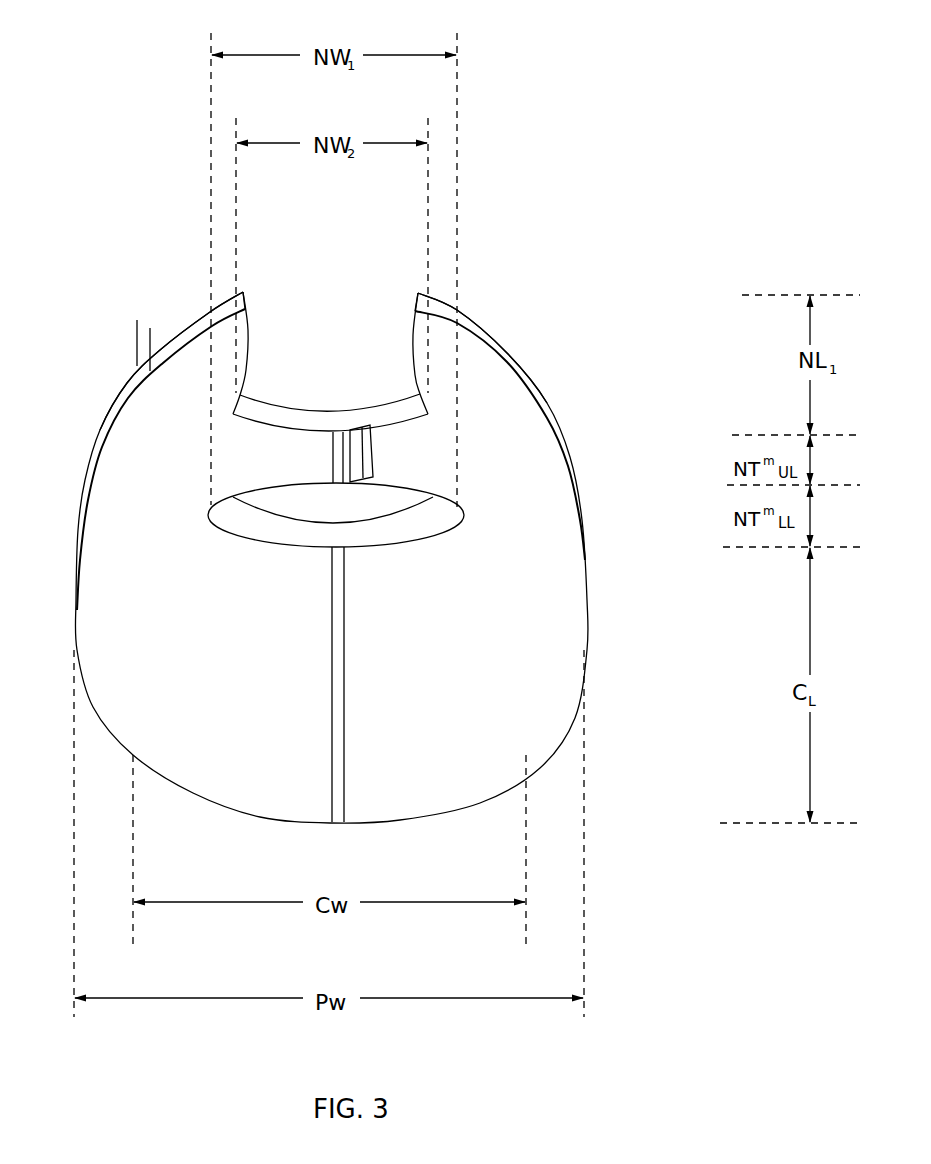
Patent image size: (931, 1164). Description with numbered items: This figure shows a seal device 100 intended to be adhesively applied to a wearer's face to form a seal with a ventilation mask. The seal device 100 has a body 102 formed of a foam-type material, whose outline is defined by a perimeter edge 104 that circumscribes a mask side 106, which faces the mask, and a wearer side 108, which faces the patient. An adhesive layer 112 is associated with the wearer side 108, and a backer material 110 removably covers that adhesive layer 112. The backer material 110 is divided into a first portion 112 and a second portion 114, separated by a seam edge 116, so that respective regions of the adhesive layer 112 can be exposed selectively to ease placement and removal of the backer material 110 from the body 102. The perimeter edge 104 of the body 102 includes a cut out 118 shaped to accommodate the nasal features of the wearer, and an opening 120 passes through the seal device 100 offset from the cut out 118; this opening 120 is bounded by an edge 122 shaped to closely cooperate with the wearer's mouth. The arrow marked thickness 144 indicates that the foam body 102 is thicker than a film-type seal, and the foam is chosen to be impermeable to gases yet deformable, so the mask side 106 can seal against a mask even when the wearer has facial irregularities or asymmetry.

The seal device 100 is at (158, 257).
The body 102 is at (507, 358).
The perimeter edge 104 is at (570, 455).
The mask side 106 is at (562, 408).
The wearer side 108 is at (557, 528).
The backer material 110 is at (235, 647).
The adhesive layer 112 is at (341, 414).
The second portion 114 is at (422, 717).
The seam edge 116 is at (343, 650).
The cut out 118 is at (383, 278).
The opening 120 is at (432, 516).
The edge 122 is at (385, 543).
The thickness 144 is at (141, 332).